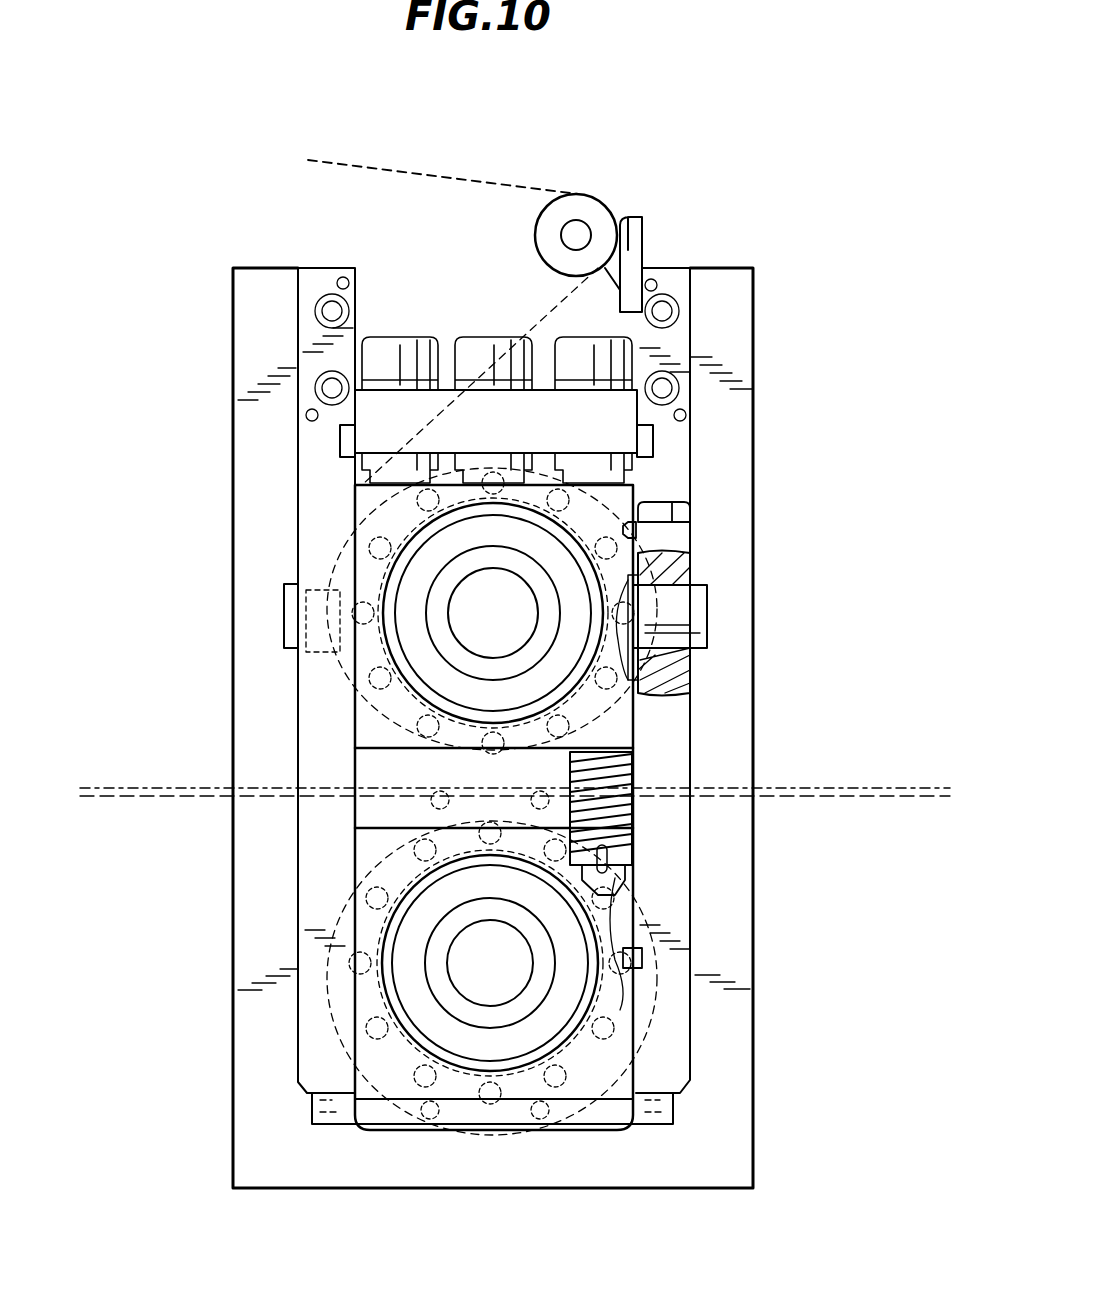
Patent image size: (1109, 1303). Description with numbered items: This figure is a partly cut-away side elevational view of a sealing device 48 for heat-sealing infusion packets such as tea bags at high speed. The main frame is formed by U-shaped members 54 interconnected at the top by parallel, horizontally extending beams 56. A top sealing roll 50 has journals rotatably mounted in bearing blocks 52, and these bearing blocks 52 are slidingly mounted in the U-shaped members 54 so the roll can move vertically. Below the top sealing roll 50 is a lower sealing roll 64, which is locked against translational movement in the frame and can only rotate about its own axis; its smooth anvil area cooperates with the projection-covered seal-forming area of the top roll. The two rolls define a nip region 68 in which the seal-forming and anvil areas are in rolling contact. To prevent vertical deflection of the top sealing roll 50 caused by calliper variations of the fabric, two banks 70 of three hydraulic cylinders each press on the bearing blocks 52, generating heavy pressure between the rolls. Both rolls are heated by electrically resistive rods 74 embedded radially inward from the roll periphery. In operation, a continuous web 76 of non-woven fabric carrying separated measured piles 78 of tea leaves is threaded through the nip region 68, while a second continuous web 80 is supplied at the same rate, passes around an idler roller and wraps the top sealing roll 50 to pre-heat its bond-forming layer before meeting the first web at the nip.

The sealing device 48 is at (818, 333).
The top sealing roll 50 is at (637, 707).
The bearing blocks 52 is at (643, 486).
The U-shaped members 54 is at (760, 270).
The beams 56 is at (317, 272).
The lower sealing roll 64 is at (643, 882).
The nip region 68 is at (390, 772).
The banks of hydraulic cylinders 70 is at (443, 388).
The electrically resistive rods 74 is at (377, 537).
The continuous web 76 is at (138, 797).
The piles of tea leaves 78 is at (137, 788).
The second continuous web 80 is at (455, 175).